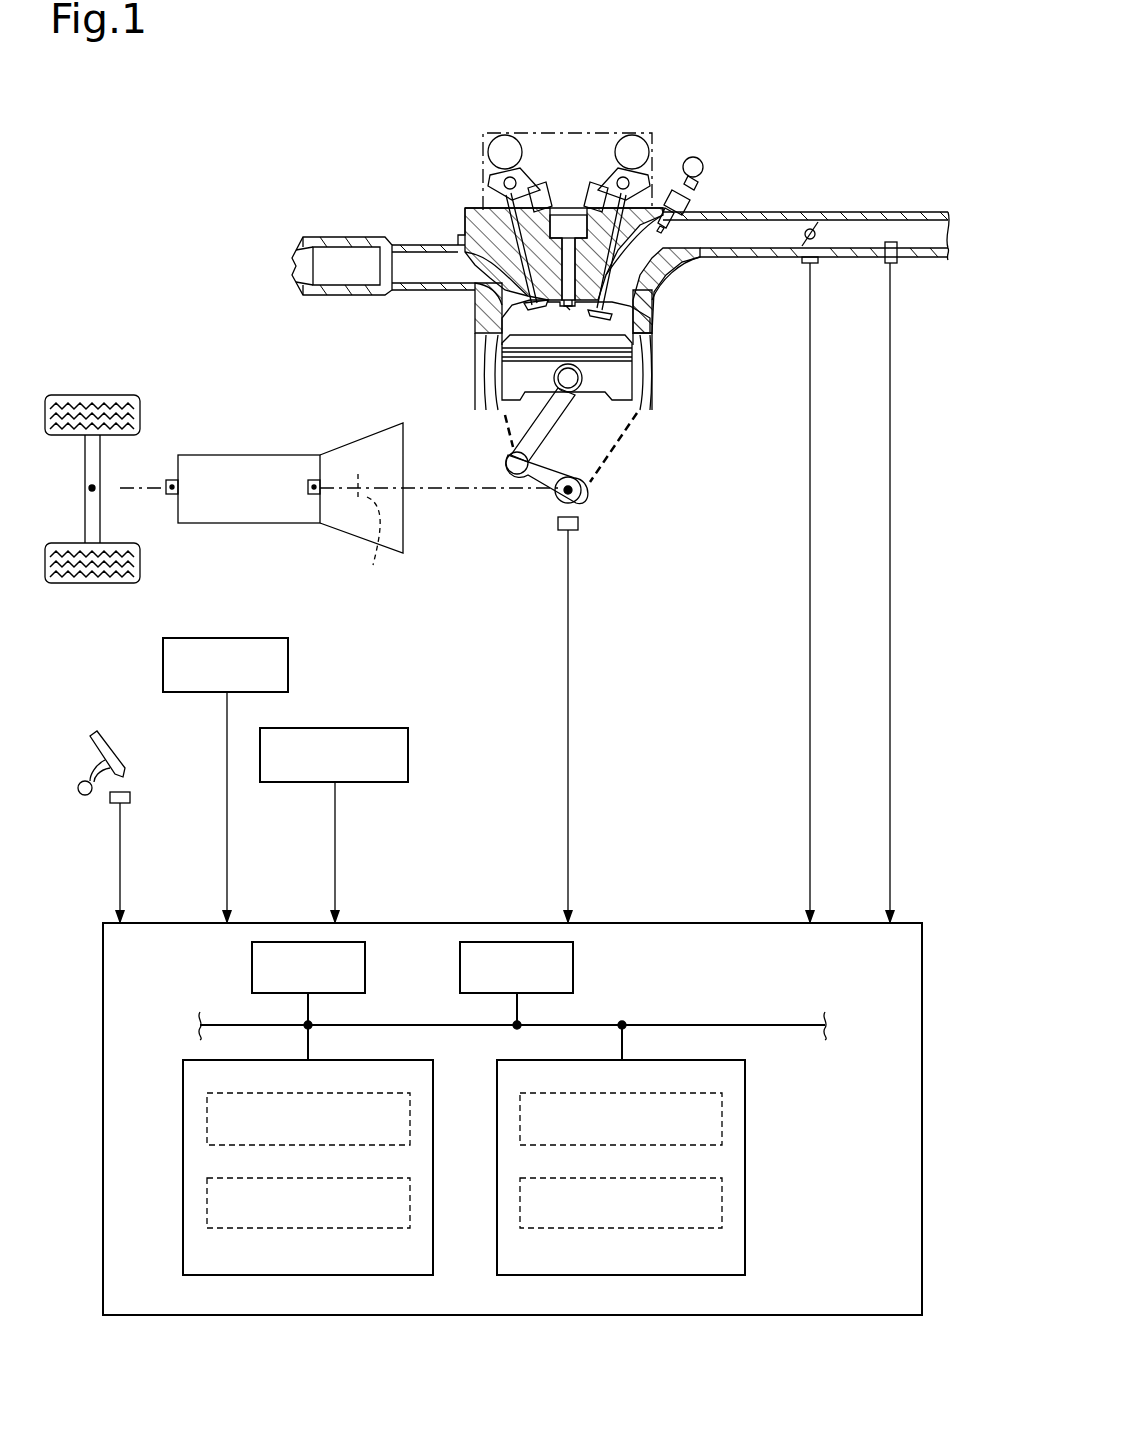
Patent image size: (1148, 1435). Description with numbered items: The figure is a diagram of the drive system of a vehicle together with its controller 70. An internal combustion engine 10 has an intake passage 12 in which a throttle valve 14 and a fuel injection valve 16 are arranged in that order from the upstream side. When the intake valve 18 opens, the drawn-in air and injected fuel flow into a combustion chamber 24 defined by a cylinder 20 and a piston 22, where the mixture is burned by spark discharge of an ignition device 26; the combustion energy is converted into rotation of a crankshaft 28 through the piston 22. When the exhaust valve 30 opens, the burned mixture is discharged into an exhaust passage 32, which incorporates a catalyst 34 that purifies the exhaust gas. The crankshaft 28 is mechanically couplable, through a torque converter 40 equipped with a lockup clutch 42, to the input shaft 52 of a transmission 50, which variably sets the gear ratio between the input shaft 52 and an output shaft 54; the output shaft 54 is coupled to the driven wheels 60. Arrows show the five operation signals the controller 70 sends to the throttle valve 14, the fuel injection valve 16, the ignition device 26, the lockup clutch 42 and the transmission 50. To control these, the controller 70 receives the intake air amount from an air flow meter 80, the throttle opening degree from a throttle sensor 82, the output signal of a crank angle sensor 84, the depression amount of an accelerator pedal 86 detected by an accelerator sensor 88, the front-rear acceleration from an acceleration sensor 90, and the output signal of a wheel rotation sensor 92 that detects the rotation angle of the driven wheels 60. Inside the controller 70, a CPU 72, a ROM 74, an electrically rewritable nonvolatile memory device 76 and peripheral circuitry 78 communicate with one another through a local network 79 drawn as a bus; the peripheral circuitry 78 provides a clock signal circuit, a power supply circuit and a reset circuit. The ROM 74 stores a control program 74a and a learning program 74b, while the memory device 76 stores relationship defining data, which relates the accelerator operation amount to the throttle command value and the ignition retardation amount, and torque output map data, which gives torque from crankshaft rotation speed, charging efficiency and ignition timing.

The internal combustion engine 10 is at (722, 113).
The intake passage 12 is at (944, 262).
The throttle valve 14 is at (820, 234).
The fuel injection valve 16 is at (684, 224).
The intake valve 18 is at (645, 292).
The cylinder 20 is at (640, 330).
The piston 22 is at (620, 382).
The combustion chamber 24 is at (502, 334).
The ignition device 26 is at (560, 215).
The crankshaft 28 is at (568, 483).
The exhaust valve 30 is at (517, 275).
The exhaust passage 32 is at (428, 258).
The catalyst 34 is at (345, 245).
The torque converter 40 is at (342, 455).
The lockup clutch 42 is at (371, 534).
The transmission 50 is at (243, 456).
The input shaft 52 is at (308, 485).
The output shaft 54 is at (167, 484).
The driven wheels 60 is at (115, 395).
The controller 70 is at (690, 923).
The CPU 72 is at (365, 968).
The ROM 74 is at (385, 1052).
The control program 74a is at (352, 1094).
The learning program 74b is at (352, 1178).
The memory device 76 is at (695, 1052).
The peripheral circuitry 78 is at (573, 968).
The local network 79 is at (760, 1025).
The air flow meter 80 is at (898, 265).
The throttle sensor 82 is at (820, 265).
The crank angle sensor 84 is at (580, 524).
The accelerator pedal 86 is at (92, 737).
The accelerator sensor 88 is at (130, 797).
The acceleration sensor 90 is at (250, 638).
The wheel rotation sensor 92 is at (358, 728).